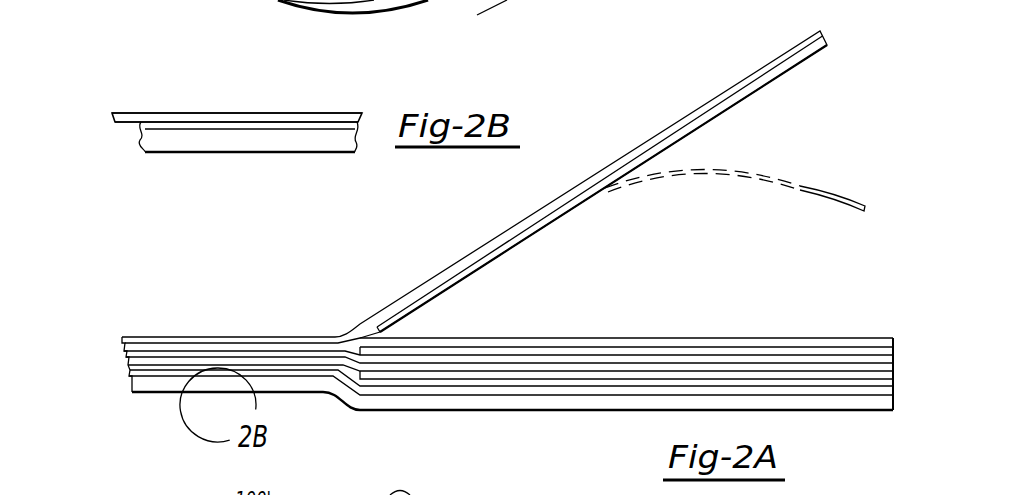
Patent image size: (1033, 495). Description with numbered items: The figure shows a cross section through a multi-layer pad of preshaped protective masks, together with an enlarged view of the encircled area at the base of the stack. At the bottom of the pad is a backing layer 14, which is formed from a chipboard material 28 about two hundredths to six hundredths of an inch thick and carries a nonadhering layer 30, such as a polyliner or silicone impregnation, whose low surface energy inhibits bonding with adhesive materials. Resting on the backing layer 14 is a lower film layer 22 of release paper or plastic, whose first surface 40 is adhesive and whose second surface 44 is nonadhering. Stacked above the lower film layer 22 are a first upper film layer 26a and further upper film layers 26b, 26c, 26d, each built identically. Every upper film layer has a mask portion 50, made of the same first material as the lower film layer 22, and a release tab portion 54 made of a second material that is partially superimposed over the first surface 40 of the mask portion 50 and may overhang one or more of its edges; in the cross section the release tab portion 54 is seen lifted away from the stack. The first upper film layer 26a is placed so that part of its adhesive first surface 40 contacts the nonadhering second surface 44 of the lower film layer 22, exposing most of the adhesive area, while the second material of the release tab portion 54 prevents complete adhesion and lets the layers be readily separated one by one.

In FIG. 2B, the backing layer 14 is at (342, 8).
In FIG. 2A, the backing layer 14 is at (165, 388).
In FIG. 2B, the lower film layer 22 is at (221, 113).
In FIG. 2A, the lower film layer 22 is at (128, 373).
In FIG. 2A, the first upper film layer 26a is at (123, 365).
In FIG. 2A, the upper film layer 26b is at (126, 351).
In FIG. 2A, the upper film layer 26c is at (122, 343).
In FIG. 2A, the upper film layer 26d is at (137, 337).
In FIG. 2B, the chipboard material 28 is at (268, 140).
In FIG. 2B, the nonadhering layer 30 is at (238, 123).
In FIG. 2B, the first surface 40 is at (128, 122).
In FIG. 2B, the second surface 44 is at (130, 113).
In FIG. 2A, the mask portion 50 is at (386, 303).
In FIG. 2A, the release tab portion 54 is at (566, 226).